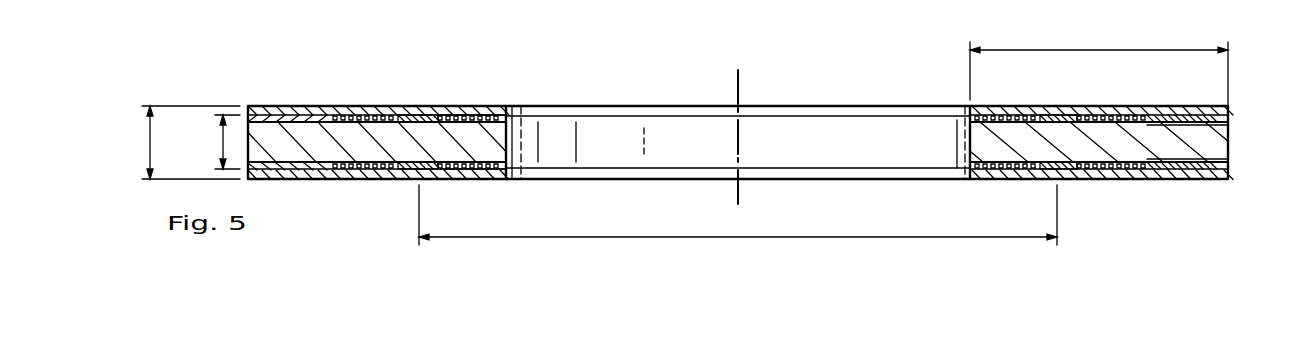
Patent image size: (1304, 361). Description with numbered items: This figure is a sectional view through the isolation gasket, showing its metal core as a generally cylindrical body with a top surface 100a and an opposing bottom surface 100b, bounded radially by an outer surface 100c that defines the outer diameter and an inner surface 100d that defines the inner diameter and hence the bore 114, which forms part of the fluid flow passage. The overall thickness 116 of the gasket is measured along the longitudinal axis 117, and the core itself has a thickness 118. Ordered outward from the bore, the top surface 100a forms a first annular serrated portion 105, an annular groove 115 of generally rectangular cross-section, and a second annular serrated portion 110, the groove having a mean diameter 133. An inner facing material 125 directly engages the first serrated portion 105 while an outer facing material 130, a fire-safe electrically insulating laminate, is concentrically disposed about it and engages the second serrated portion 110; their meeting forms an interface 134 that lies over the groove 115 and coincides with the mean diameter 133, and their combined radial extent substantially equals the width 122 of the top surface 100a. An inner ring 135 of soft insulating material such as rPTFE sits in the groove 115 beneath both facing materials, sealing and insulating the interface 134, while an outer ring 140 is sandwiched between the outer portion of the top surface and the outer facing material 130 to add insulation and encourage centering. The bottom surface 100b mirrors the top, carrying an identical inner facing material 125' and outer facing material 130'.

The thickness of the gasket 116 is at (150, 146).
The thickness of the metal core 118 is at (222, 142).
The top surface 100a is at (292, 118).
The bottom surface 100b is at (310, 163).
The outer surface 100c is at (1229, 151).
The inner surface 100d is at (507, 140).
The second annular serrated portion 110 is at (370, 114).
The annular groove 115 is at (415, 120).
The interface 134 is at (427, 95).
The first annular serrated portion 105 is at (458, 113).
The bore 114 is at (563, 96).
The outer facing material 130' is at (415, 194).
The inner facing material 125' is at (473, 197).
The longitudinal axis 117 is at (742, 82).
The mean diameter 133 is at (788, 236).
The width of the top surface 122 is at (1170, 48).
The inner facing material 125 is at (1060, 115).
The inner ring 135 is at (1047, 117).
The outer facing material 130 is at (1063, 121).
The outer ring 140 is at (1185, 117).